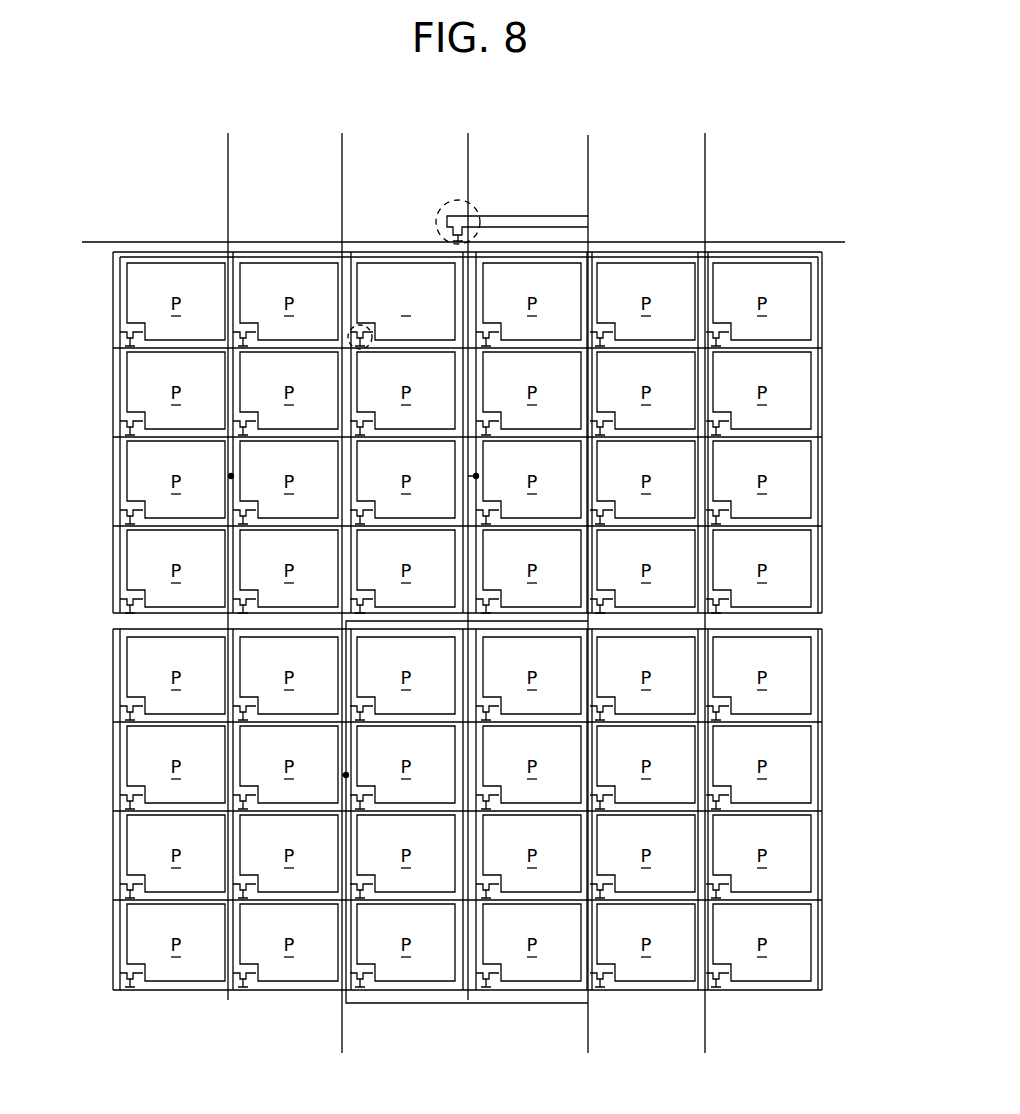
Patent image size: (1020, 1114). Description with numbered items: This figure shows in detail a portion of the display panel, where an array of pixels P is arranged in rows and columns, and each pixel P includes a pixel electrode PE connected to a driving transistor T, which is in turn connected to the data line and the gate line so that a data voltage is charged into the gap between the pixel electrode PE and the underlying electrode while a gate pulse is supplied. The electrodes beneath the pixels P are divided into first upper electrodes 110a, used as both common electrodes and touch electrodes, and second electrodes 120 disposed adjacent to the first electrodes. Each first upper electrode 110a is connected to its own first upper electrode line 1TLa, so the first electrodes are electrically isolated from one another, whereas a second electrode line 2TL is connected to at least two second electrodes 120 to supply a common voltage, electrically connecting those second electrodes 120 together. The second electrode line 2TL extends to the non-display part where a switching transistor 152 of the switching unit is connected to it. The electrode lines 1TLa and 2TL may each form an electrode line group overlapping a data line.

The first upper electrode line 1TLa is at (226, 148).
The second electrode line 2TL is at (590, 160).
The switching transistor 152 is at (458, 200).
The driving transistor T is at (362, 325).
The pixel electrode PE is at (413, 262).
The first upper electrode 110a is at (113, 557).
The second electrode 120 is at (113, 693).
The pixel P is at (465, 625).